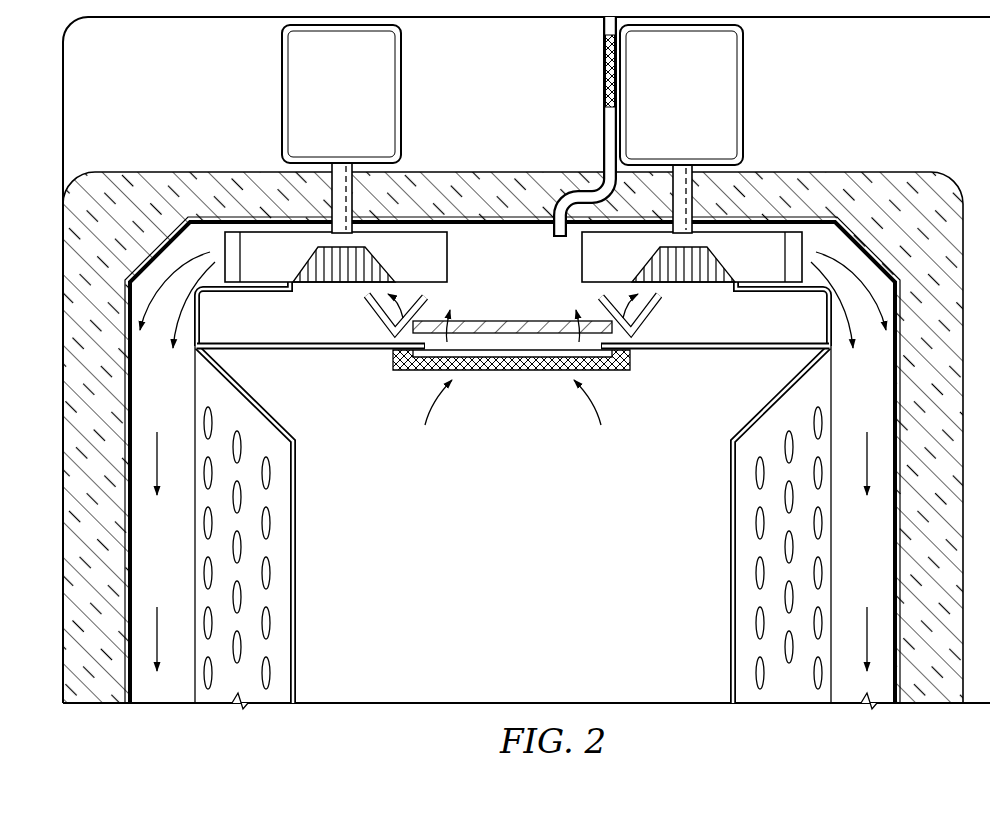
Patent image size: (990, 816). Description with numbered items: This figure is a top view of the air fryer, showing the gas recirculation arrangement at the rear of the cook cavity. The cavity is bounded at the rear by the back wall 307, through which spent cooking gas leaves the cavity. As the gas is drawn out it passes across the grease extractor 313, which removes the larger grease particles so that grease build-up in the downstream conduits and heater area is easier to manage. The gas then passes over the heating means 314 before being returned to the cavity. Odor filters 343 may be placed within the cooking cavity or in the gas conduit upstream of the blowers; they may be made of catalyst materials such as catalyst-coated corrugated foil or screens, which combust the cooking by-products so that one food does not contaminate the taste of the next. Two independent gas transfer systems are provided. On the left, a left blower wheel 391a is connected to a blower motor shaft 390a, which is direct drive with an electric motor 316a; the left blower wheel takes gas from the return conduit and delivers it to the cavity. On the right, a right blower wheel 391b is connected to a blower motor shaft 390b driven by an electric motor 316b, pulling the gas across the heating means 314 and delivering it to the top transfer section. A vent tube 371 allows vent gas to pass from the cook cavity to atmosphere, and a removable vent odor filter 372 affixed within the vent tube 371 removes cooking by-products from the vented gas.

The back wall 307 is at (727, 352).
The grease extractor 313 is at (513, 371).
The heating means 314 is at (505, 320).
The electric motor 316a is at (318, 103).
The electric motor 316b is at (658, 103).
The odor filter 343 is at (378, 318).
The vent tube 371 is at (610, 138).
The vent odor filter 372 is at (603, 65).
The blower motor shaft 390a is at (347, 193).
The blower motor shaft 390b is at (687, 195).
The blower wheel 391a is at (257, 248).
The blower wheel 391b is at (771, 243).